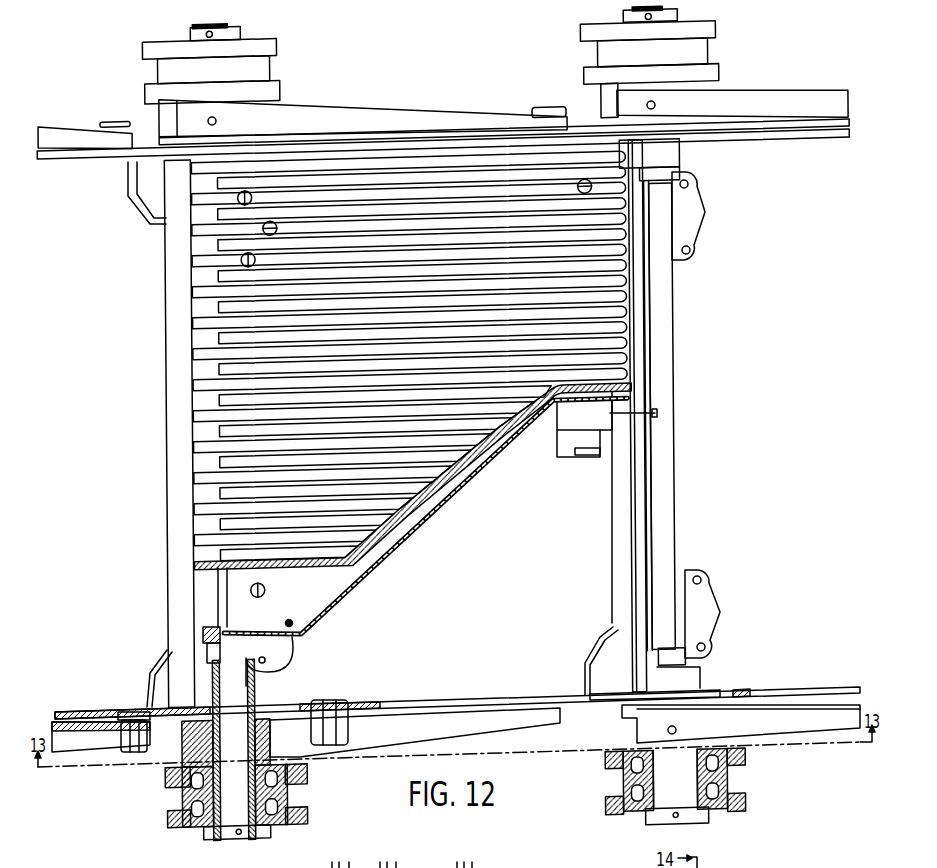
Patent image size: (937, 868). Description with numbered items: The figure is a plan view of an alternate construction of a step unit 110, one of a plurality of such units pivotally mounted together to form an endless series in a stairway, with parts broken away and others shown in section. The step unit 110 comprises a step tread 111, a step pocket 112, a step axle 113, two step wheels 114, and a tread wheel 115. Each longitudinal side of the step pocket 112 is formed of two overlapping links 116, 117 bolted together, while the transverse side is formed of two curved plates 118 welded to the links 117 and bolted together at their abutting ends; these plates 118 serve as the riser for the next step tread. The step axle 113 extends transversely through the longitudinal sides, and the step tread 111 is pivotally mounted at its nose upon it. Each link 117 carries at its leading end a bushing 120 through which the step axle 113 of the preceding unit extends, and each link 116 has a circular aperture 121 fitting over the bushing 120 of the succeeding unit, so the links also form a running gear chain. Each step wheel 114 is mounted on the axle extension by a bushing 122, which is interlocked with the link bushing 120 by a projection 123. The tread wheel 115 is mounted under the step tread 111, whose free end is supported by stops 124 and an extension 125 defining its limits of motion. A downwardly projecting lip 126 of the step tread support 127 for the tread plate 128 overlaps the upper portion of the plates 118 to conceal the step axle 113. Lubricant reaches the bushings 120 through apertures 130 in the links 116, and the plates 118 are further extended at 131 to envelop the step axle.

The step unit 110 is at (433, 55).
The step tread 111 is at (200, 350).
The step pocket 112 is at (525, 665).
The step axle 113 is at (237, 688).
The step wheel 114 is at (745, 757).
The tread wheel 115 is at (607, 428).
The link 116 is at (818, 732).
The link 117 is at (808, 690).
The curved plate 118 is at (208, 645).
The bushing 120 is at (255, 722).
The circular aperture 121 is at (200, 740).
The bushing 122 is at (667, 800).
The projection 123 is at (675, 778).
The stop 124 is at (588, 668).
The extension 125 is at (582, 456).
The lip 126 is at (203, 633).
The step tread support 127 is at (367, 571).
The tread plate 128 is at (306, 566).
The aperture 130 is at (695, 730).
The extension of plate 131 is at (703, 670).